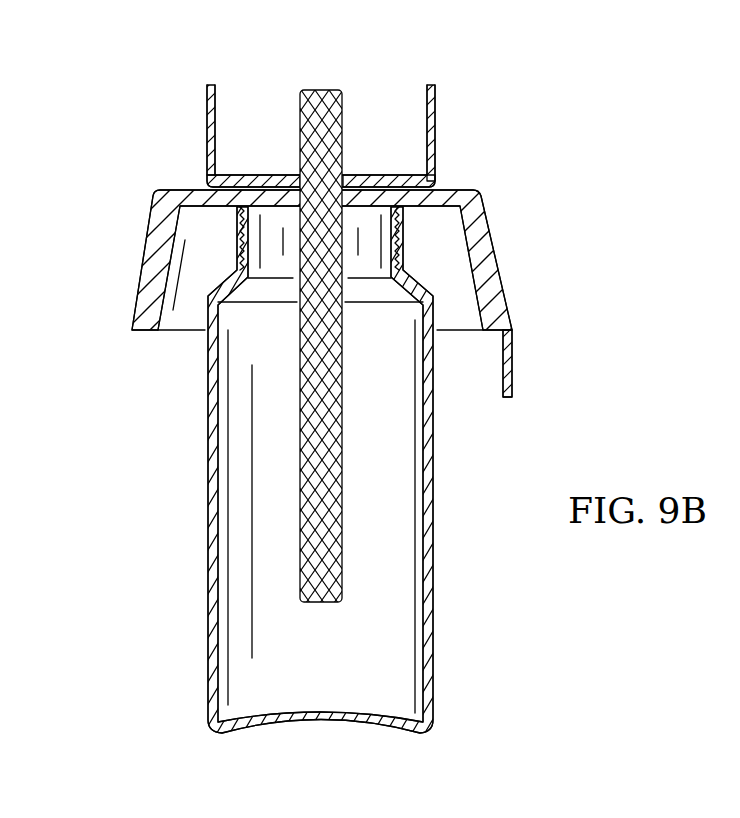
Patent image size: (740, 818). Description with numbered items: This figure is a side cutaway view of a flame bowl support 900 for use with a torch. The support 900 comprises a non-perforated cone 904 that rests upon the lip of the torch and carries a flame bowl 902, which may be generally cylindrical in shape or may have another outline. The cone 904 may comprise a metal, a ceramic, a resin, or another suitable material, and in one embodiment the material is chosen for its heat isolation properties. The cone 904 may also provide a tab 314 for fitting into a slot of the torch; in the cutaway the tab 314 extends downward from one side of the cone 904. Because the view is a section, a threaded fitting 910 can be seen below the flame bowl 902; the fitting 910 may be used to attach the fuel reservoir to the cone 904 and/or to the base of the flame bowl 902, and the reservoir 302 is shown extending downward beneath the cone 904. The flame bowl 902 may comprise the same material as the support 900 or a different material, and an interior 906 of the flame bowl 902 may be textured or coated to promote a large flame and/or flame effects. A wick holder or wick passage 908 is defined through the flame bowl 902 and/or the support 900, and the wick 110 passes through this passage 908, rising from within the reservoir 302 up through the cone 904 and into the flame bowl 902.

The flame bowl support 900 is at (118, 220).
The flame bowl 902 is at (207, 130).
The interior of the flame bowl 906 is at (427, 103).
The wick passage 908 is at (302, 175).
The cone 904 is at (140, 277).
The threaded fitting 910 is at (238, 235).
The tab 314 is at (513, 357).
The vial 302 is at (208, 545).
The wick 110 is at (345, 108).